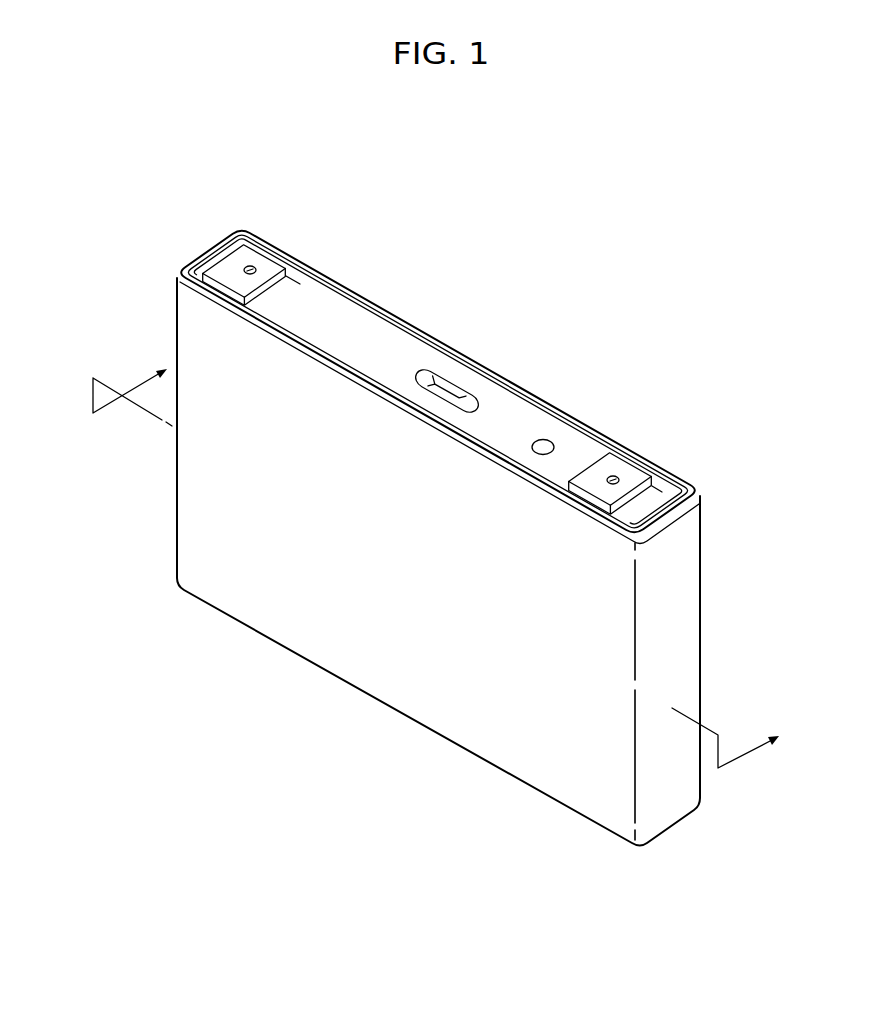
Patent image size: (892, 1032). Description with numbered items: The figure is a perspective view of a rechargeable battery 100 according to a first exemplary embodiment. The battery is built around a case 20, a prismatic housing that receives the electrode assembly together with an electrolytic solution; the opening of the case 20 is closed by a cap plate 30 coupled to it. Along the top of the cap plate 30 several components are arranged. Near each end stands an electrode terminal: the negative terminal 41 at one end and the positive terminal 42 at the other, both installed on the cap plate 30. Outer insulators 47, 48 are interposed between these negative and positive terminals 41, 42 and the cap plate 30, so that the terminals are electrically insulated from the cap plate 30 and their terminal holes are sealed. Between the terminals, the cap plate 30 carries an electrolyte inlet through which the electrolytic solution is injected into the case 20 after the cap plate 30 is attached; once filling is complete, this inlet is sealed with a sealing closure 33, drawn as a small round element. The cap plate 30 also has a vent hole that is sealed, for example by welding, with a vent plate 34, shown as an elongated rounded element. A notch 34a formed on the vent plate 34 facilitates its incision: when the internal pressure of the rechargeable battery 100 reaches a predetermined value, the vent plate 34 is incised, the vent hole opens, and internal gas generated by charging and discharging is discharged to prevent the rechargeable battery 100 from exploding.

The rechargeable battery 100 is at (567, 360).
The case 20 is at (358, 670).
The cap plate 30 is at (382, 334).
The sealing closure 33 is at (544, 446).
The vent plate 34 is at (443, 380).
The notch 34a is at (458, 394).
The negative terminal 41 is at (257, 257).
The positive terminal 42 is at (623, 469).
The outer insulator 47 is at (304, 290).
The outer insulator 48 is at (640, 492).